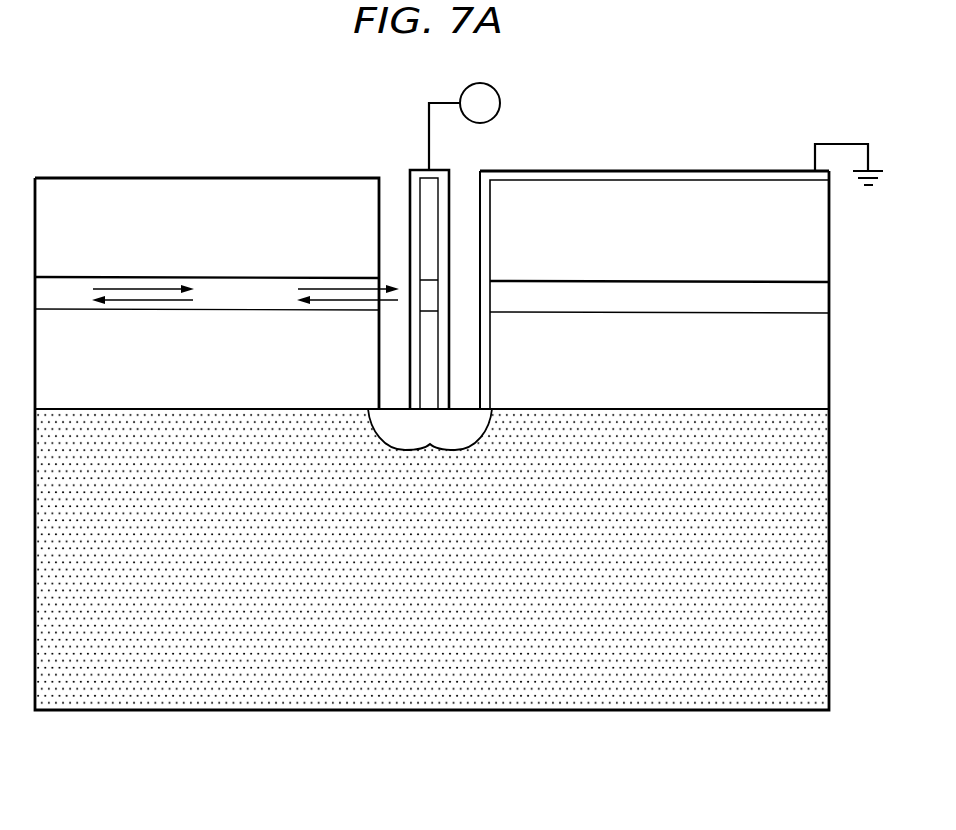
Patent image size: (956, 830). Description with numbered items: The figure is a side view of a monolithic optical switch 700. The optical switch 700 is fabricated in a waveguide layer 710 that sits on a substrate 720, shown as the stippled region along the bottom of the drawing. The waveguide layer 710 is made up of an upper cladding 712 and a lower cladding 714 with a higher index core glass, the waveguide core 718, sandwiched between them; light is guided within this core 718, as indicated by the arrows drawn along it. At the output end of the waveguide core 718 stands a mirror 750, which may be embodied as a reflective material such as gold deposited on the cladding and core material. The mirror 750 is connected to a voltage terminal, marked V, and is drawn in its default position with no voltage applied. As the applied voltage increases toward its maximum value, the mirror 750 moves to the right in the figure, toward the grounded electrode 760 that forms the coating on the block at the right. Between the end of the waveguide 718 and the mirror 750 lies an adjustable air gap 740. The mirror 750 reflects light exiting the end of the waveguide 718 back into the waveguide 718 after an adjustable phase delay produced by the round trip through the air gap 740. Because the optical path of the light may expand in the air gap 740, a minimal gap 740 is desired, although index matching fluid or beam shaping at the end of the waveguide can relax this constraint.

The monolithic optical switch 700 is at (172, 104).
The waveguide layer 710 is at (63, 177).
The upper cladding 712 is at (117, 233).
The lower cladding 714 is at (117, 369).
The waveguide core 718 is at (251, 290).
The substrate 720 is at (78, 712).
The air gap 740 is at (413, 152).
The mirror 750 is at (413, 187).
The grounded electrode 760 is at (491, 242).